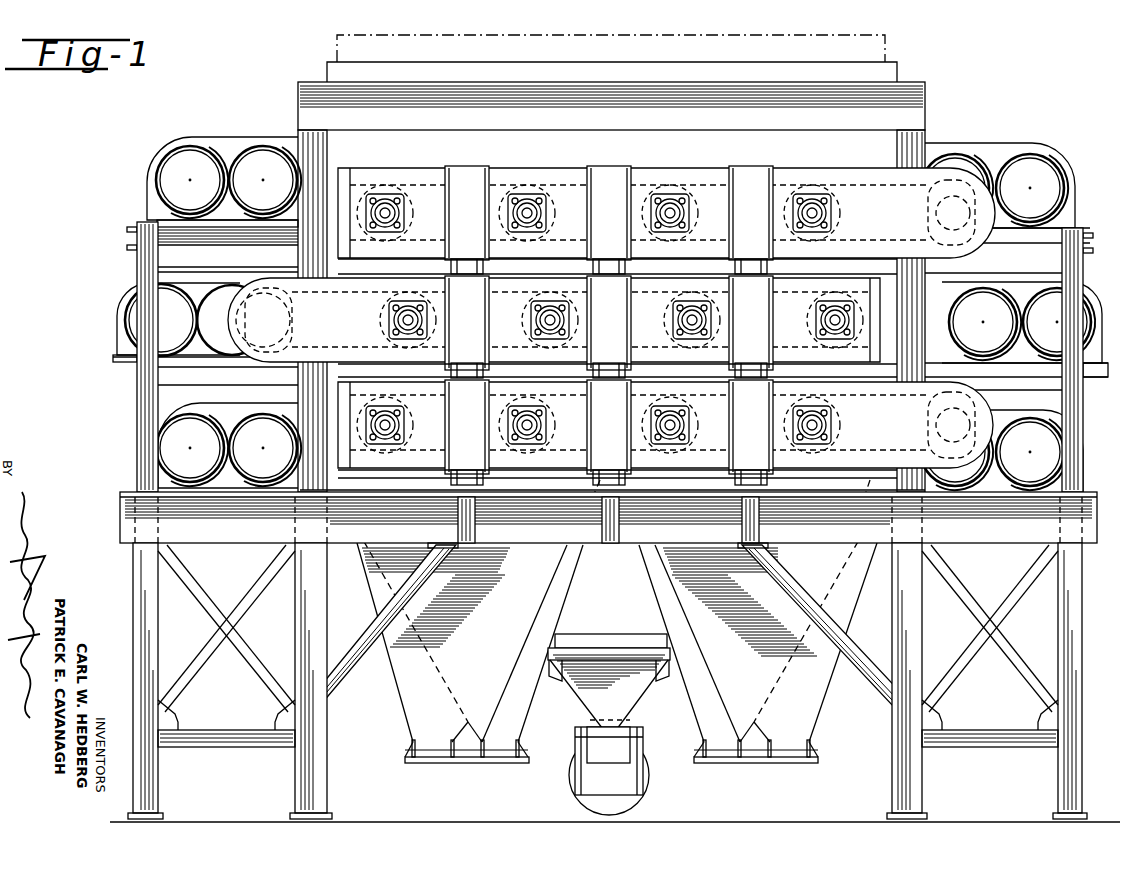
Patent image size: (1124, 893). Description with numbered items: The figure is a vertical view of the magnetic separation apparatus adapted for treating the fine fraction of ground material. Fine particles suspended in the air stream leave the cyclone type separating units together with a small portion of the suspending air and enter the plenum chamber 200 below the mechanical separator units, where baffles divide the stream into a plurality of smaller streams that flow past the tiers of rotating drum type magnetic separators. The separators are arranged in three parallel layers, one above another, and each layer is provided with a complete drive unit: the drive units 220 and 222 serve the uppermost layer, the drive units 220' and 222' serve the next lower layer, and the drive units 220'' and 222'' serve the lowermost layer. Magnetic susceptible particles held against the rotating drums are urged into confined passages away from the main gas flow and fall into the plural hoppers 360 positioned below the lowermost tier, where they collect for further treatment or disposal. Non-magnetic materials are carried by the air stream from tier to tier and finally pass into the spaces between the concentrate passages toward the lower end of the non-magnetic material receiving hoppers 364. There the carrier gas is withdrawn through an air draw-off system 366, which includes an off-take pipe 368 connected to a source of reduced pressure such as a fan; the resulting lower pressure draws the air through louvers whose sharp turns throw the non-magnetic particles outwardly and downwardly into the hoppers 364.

The plenum chamber 200 is at (337, 44).
The drive unit 220 is at (196, 178).
The drive unit 222 is at (1007, 173).
The drive unit 222' is at (172, 314).
The drive unit 220' is at (1033, 312).
The drive unit 220'' is at (195, 445).
The drive unit 222'' is at (1022, 447).
The hopper 360 is at (405, 695).
The non-magnetic material receiving hopper 364 is at (530, 700).
The air draw-off system 366 is at (630, 706).
The off-take pipe 368 is at (640, 780).